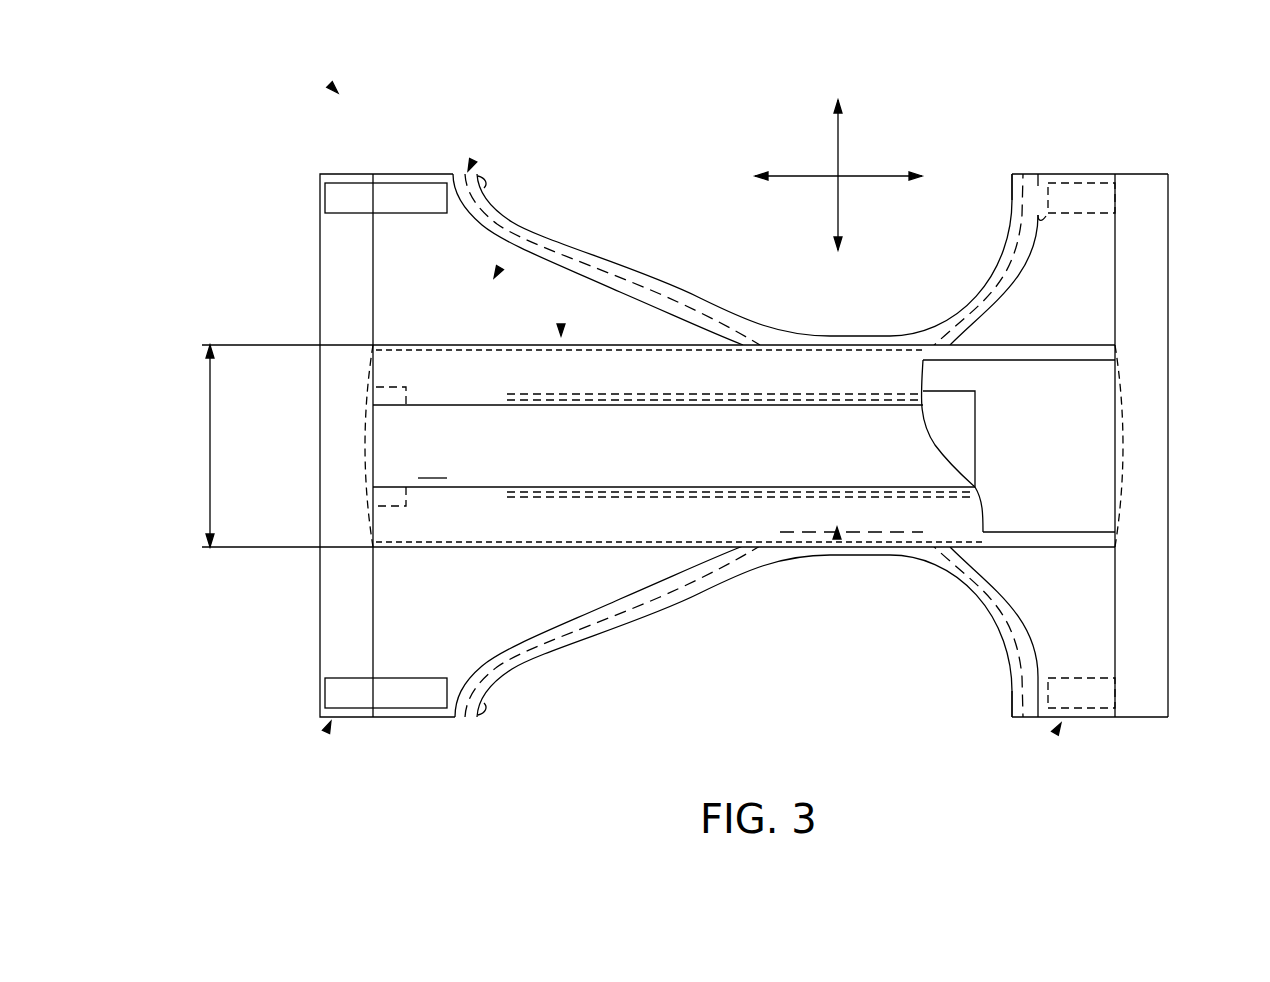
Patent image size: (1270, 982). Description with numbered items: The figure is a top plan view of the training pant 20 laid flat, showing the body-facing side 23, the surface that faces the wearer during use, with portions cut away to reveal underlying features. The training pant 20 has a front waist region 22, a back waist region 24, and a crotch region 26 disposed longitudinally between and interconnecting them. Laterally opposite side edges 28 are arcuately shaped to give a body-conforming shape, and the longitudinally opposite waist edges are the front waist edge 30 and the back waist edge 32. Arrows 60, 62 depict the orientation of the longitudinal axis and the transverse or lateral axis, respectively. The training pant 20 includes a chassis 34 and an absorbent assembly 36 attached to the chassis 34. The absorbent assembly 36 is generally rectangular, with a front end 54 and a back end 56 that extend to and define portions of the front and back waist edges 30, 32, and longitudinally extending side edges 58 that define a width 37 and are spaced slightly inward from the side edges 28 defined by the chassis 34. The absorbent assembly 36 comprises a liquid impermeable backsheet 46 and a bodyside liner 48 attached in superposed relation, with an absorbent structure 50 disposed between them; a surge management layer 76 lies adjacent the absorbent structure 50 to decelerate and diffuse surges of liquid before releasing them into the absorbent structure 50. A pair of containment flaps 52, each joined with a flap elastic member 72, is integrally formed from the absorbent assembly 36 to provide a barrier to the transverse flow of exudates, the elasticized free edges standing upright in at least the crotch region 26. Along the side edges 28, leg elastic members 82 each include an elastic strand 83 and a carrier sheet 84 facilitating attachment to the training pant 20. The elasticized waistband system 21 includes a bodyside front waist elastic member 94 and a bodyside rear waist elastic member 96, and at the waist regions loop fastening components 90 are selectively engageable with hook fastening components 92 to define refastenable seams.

The training pant 20 is at (335, 90).
The elasticized waistband system 21 is at (328, 728).
The front waist region 22 is at (1058, 730).
The body-facing side 23 is at (483, 617).
The back waist region 24 is at (470, 166).
The crotch region 26 is at (836, 532).
The side edges 28 is at (863, 335).
The front waist edge 30 is at (1168, 352).
The back waist edge 32 is at (318, 368).
The chassis 34 is at (497, 272).
The absorbent assembly 36 is at (561, 330).
The width 37 is at (210, 413).
The backsheet 46 is at (1097, 352).
The bodyside liner 48 is at (648, 433).
The absorbent structure 50 is at (1093, 540).
The containment flaps 52 is at (688, 373).
The front end 54 is at (1168, 444).
The back end 56 is at (318, 527).
The side edges 58 is at (621, 348).
The arrow 60 is at (862, 176).
The arrow 62 is at (838, 145).
The flap elastic member 72 is at (731, 390).
The surge management layer 76 is at (975, 418).
The leg elastic members 82 is at (1040, 213).
The elastic strand 83 is at (990, 293).
The carrier sheet 84 is at (1025, 210).
The loop fastening components 90 is at (428, 190).
The hook fastening components 92 is at (1082, 190).
The bodyside front waist elastic member 94 is at (1143, 500).
The bodyside rear waist elastic member 96 is at (340, 485).